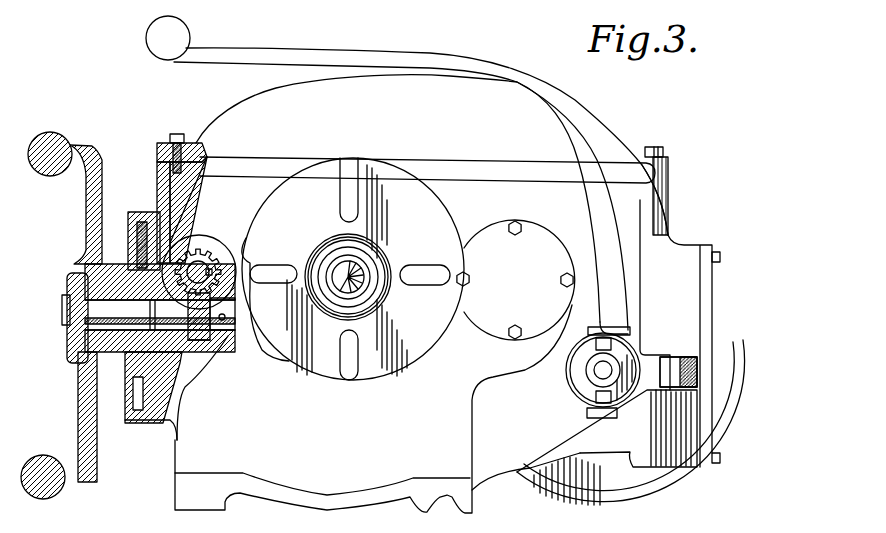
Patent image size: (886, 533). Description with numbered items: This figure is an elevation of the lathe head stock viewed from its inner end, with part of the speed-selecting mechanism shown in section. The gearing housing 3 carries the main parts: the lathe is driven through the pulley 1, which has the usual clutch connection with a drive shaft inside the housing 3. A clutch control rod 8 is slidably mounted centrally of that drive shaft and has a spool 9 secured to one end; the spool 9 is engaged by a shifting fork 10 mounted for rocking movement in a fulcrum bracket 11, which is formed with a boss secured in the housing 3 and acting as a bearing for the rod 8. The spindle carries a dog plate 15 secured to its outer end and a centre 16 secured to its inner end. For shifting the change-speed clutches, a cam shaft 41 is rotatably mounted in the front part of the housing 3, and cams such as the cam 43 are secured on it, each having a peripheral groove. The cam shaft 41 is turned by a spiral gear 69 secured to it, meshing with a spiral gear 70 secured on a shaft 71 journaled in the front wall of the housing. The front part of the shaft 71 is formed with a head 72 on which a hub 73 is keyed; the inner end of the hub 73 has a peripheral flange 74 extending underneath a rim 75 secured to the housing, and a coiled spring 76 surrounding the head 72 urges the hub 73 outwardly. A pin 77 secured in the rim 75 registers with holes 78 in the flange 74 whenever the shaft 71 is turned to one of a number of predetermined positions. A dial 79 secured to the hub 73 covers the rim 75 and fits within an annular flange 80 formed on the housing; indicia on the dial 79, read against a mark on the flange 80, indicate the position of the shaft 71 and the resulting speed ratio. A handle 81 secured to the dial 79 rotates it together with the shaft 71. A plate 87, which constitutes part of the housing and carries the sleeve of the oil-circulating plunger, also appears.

The pulley 1 is at (657, 482).
The gearing housing 3 is at (178, 446).
The clutch control rod 8 is at (600, 372).
The spool 9 is at (580, 373).
The shifting fork 10 is at (632, 337).
The fulcrum bracket 11 is at (697, 377).
The dog plate 15 is at (323, 380).
The centre 16 is at (360, 283).
The cam shaft 41 is at (203, 267).
The cam 43 is at (227, 288).
The spiral gear 69 is at (205, 250).
The spiral gear 70 is at (170, 330).
The shaft 71 is at (197, 347).
The head 72 is at (100, 313).
The hub 73 is at (73, 300).
The peripheral flange 74 is at (170, 252).
The rim 75 is at (168, 243).
The coiled spring 76 is at (160, 315).
The pin 77 is at (105, 280).
The holes 78 is at (173, 360).
The dial 79 is at (128, 258).
The annular flange 80 is at (140, 210).
The handle 81 is at (53, 487).
The plate 87 is at (707, 280).